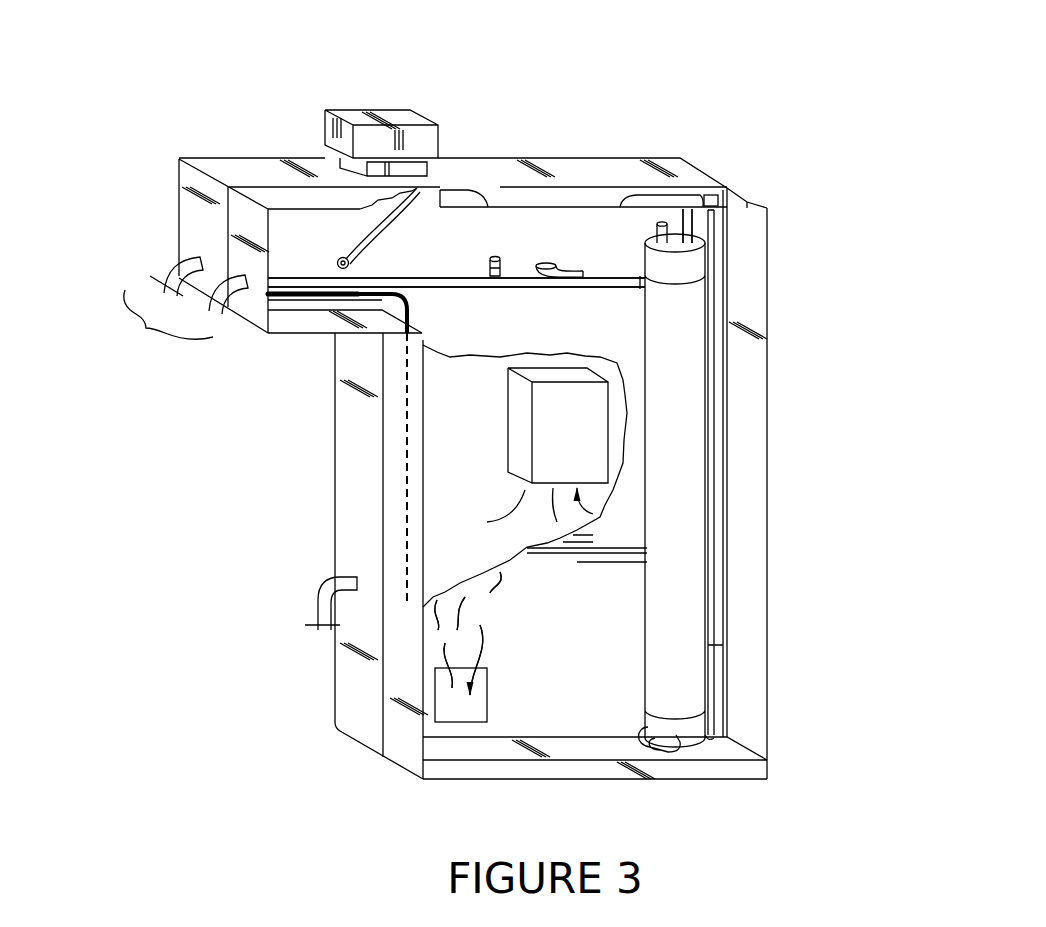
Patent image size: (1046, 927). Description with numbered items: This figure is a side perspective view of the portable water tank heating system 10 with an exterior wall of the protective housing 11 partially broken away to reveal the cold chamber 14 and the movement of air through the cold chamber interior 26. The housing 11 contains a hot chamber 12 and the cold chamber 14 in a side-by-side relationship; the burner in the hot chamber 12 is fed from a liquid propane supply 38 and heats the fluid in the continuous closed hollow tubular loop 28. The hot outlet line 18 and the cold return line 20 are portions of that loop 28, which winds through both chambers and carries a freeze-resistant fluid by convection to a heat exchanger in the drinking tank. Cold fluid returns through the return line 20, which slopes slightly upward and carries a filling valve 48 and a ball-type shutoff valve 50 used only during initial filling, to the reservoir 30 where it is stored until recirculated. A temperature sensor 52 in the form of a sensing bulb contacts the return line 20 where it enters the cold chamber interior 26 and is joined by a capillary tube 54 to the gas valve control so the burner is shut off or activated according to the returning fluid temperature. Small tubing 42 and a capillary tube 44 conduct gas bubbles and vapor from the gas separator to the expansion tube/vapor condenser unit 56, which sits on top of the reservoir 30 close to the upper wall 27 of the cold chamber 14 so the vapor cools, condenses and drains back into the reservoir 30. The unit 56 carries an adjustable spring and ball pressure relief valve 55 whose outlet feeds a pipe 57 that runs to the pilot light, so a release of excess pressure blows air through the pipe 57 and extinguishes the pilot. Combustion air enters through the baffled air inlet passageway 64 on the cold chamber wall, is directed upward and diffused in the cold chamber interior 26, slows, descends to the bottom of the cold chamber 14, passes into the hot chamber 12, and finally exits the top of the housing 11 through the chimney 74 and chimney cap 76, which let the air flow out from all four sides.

The system 10 is at (703, 153).
The protective housing 11 is at (353, 518).
The hot chamber 12 is at (233, 167).
The cold chamber 14 is at (749, 200).
The hot outlet line 18 is at (170, 272).
The cold return line 20 is at (430, 288).
The cold chamber interior 26 is at (578, 712).
The upper wall 27 is at (343, 190).
The continuous closed hollow tubular loop 28 is at (180, 321).
The reservoir 30 is at (693, 530).
The liquid propane supply 38 is at (322, 588).
The tubing 42 is at (377, 242).
The capillary tube 44 is at (425, 200).
The filling valve 48 is at (500, 260).
The shutoff valve 50 is at (577, 281).
The temperature sensor 52 is at (332, 292).
The capillary tube 54 is at (410, 548).
The pressure relief valve 55 is at (725, 190).
The expansion tube/vapor condenser unit 56 is at (688, 205).
The pipe 57 is at (718, 412).
The air inlet passageway 64 is at (553, 400).
The chimney 74 is at (412, 165).
The chimney cap 76 is at (403, 116).